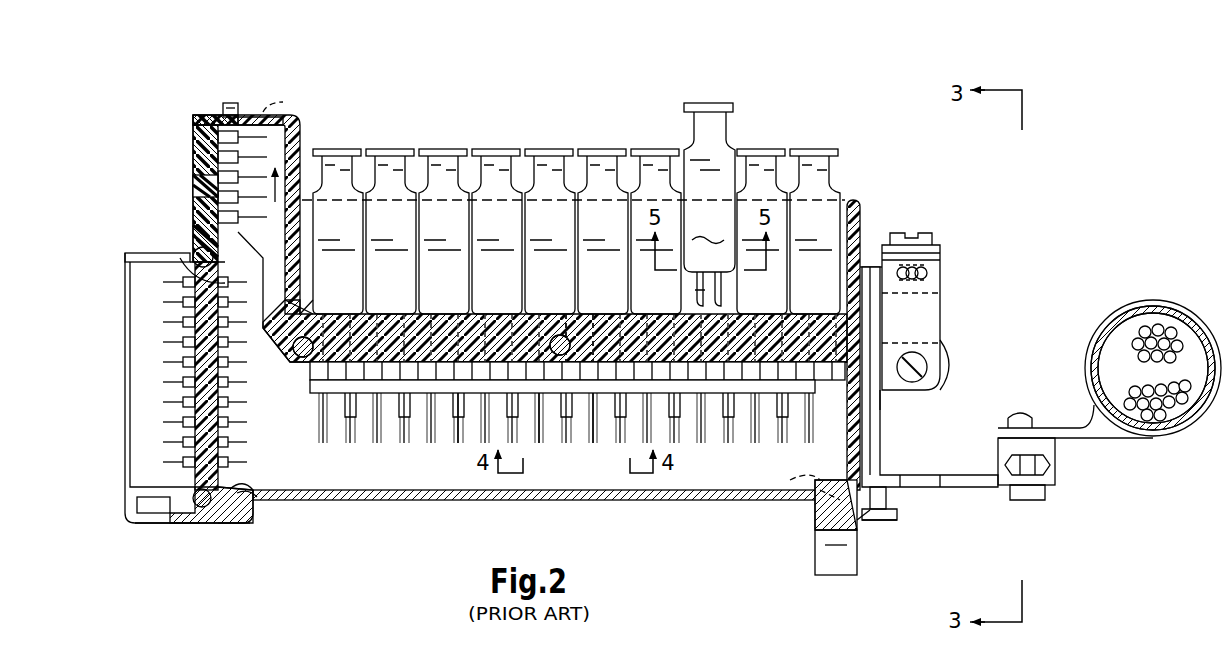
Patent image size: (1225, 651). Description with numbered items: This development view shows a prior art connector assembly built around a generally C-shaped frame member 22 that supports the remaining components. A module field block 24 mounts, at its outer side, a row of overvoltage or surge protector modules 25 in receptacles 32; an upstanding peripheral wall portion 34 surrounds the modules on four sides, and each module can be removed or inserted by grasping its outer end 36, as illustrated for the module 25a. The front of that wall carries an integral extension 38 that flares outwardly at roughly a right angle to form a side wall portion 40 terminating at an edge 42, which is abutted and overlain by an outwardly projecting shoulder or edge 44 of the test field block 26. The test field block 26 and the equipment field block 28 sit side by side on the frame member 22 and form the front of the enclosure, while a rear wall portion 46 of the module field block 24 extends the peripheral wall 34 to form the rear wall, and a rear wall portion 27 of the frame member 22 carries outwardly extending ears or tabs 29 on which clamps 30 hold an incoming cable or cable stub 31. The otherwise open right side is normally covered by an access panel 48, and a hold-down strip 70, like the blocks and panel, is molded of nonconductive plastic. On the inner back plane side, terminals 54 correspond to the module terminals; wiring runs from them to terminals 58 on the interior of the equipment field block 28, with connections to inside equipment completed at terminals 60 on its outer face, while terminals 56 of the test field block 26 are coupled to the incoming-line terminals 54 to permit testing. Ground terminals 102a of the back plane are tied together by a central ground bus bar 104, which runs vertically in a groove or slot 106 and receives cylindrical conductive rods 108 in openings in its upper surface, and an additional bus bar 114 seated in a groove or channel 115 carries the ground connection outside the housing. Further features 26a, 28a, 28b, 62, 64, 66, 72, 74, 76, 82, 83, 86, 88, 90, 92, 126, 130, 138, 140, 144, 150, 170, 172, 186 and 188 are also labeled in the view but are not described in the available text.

The C-shaped frame member 22 is at (886, 466).
The module field block 24 is at (278, 368).
The overvoltage or surge protector modules 25 is at (507, 148).
The protector module 25a is at (705, 236).
The test field block 26 is at (182, 153).
The terminal block end 26a is at (195, 268).
The rear wall portion 27 is at (880, 410).
The equipment field block 28 is at (126, 428).
The bracket lip 28a is at (155, 258).
The bracket bottom 28b is at (148, 526).
The ears or tabs 29 is at (975, 474).
The clamps 30 is at (1052, 428).
The cable or cable stub 31 is at (292, 262).
The receptacles 32 is at (470, 335).
The upstanding peripheral wall portion 34 is at (862, 205).
The outer ends 36 is at (718, 130).
The integral extension 38 is at (300, 126).
The side wall portion 40 is at (258, 112).
The edge 42 is at (193, 121).
The shoulder portion or edge 44 is at (218, 103).
The rear wall portion 46 is at (846, 462).
The access panel 48 is at (508, 497).
The terminals 54 is at (410, 455).
The terminals 56 is at (270, 210).
The terminals 58 is at (252, 418).
The terminals 60 is at (162, 368).
The insulator 62 is at (187, 188).
The mounting foot 64 is at (850, 560).
The joint 66 is at (250, 484).
The hold-down strip 70 is at (863, 543).
The slot 72 is at (790, 498).
The foot body 74 is at (826, 546).
The slot end 76 is at (820, 515).
The screw head 82 is at (895, 520).
The screw 83 is at (890, 503).
The o-ring 86 is at (222, 524).
The seal 88 is at (258, 497).
The bottom edge 90 is at (242, 524).
The insert 92 is at (150, 495).
The ground terminal 102a is at (552, 400).
The bus bar 104 is at (592, 432).
The groove or slot 106 is at (568, 350).
The conductive rods 108 is at (462, 445).
The additional bus bar member 114 is at (880, 340).
The groove or channel 115 is at (600, 352).
The boss 126 is at (952, 362).
The connector block 130 is at (952, 296).
The screw 138 is at (928, 370).
The block mount 140 is at (870, 260).
The cap 144 is at (930, 234).
The top plate 150 is at (940, 250).
The insulator 170 is at (200, 233).
The screw 172 is at (194, 262).
The cap 186 is at (226, 103).
The seal 188 is at (300, 112).